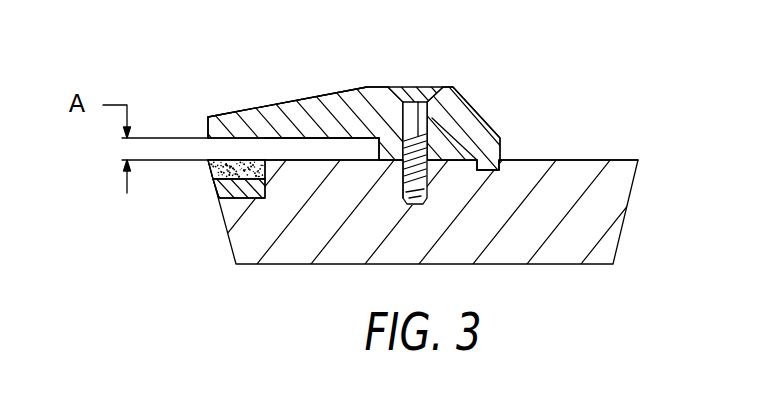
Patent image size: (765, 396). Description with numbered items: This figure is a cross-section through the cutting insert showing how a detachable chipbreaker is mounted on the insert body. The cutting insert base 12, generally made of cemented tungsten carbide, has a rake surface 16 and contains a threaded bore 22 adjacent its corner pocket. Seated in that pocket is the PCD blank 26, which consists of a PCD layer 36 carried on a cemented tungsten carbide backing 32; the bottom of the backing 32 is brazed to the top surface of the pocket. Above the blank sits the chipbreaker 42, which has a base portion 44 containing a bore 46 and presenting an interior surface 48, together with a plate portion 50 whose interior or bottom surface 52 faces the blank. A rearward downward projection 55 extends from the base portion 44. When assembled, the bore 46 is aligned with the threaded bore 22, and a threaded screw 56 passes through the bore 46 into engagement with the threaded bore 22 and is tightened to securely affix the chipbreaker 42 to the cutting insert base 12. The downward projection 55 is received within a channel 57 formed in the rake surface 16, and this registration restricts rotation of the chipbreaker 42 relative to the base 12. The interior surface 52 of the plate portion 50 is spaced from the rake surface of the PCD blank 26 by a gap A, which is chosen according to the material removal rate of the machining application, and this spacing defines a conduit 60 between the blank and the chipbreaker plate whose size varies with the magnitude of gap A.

The cutting insert base 12 is at (612, 190).
The rake surface 16 is at (633, 161).
The threaded bore 22 is at (401, 186).
The PCD blank 26 is at (208, 168).
The cemented tungsten carbide backing 32 is at (222, 186).
The PCD layer 36 is at (257, 173).
The chipbreaker 42 is at (243, 111).
The base portion 44 is at (500, 120).
The bore 46 is at (455, 88).
The interior surface 48 is at (377, 143).
The plate portion 50 is at (320, 95).
The interior surface 52 is at (216, 141).
The rearward downward projection 55 is at (498, 158).
The threaded screw 56 is at (421, 85).
The channel 57 is at (484, 171).
The conduit 60 is at (300, 150).